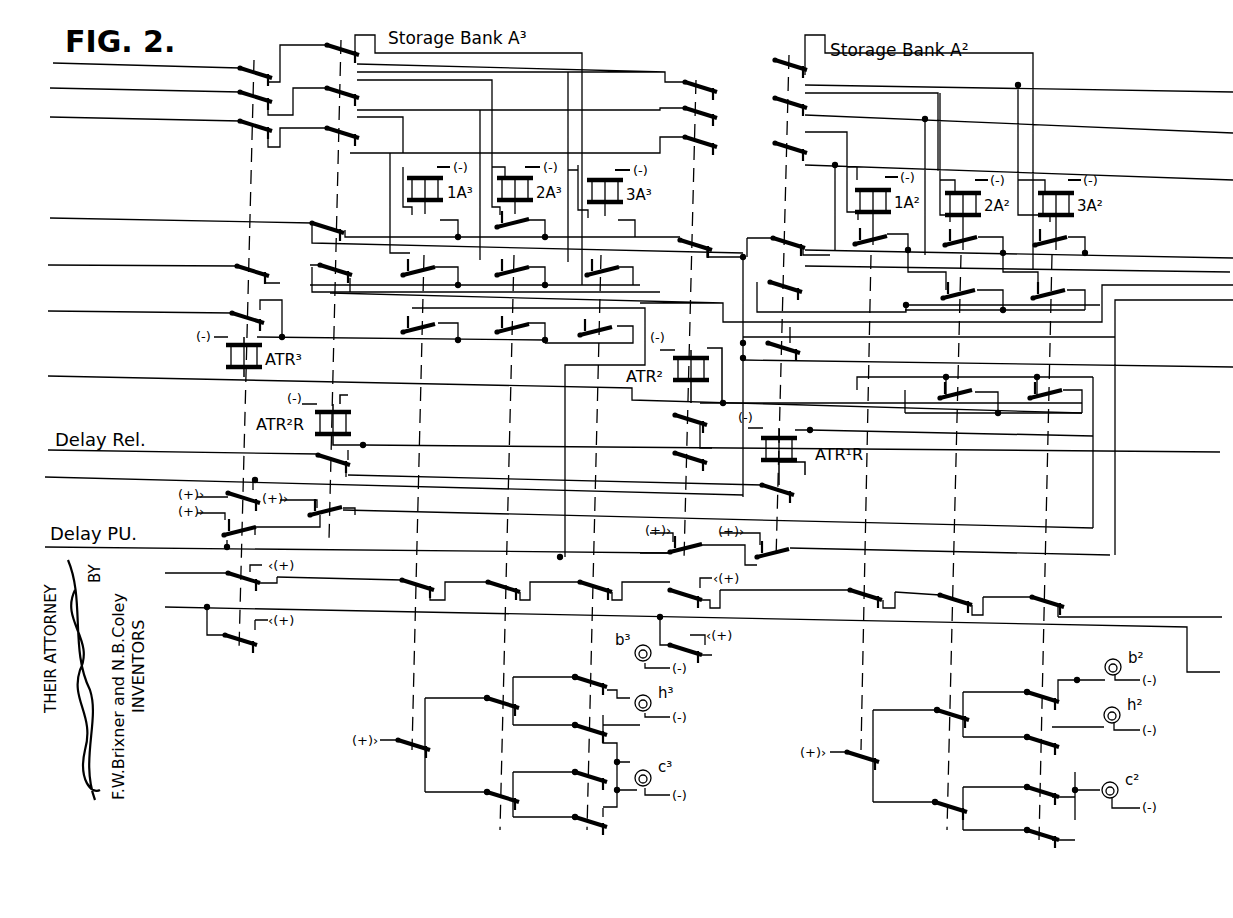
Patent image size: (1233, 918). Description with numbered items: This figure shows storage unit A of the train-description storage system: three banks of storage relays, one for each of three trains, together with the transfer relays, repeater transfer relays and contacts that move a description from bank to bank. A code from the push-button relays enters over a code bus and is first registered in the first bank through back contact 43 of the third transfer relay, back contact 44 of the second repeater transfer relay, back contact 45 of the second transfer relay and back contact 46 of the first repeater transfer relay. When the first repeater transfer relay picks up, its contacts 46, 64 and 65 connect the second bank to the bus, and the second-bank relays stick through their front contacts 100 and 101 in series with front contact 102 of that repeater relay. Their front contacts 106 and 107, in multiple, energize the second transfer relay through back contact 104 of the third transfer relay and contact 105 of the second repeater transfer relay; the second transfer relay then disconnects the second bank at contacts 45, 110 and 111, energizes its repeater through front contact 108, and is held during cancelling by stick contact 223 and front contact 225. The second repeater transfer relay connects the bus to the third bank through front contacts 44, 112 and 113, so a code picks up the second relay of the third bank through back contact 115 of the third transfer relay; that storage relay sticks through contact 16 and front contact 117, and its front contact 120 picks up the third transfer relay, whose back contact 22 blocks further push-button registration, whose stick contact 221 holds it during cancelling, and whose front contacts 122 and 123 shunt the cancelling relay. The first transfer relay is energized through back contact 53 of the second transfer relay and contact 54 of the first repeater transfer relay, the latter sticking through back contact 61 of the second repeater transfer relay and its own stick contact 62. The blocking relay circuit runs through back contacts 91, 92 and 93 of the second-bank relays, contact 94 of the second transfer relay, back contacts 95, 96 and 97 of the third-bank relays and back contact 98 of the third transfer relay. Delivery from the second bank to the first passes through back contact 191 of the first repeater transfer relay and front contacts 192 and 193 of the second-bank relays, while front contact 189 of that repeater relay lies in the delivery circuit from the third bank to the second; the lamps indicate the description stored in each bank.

The front contact of transfer repeater relay ATR²R 113 is at (331, 58).
The front contact of transfer repeater relay ATR²R 112 is at (331, 100).
The contact of repeater transfer relay ATR²R 44 is at (332, 140).
The back contact of transfer relay ATR³ 115 is at (243, 103).
The back contact of transfer relay ATR³ 43 is at (245, 132).
The front contact of repeater transfer relay ATR²R 117 is at (321, 222).
The back contact of transfer relay ATR³ 22 is at (253, 272).
The stick contact of transfer relay ATR³ 221 is at (240, 310).
The front contact of storage relay 2A³ 120 is at (506, 327).
The contact 16 is at (520, 226).
The front contact of repeater transfer relay ATR¹R 102 is at (788, 237).
The contact of transfer relay ATR² 111 is at (688, 93).
The contact of transfer relay ATR² 110 is at (687, 119).
The back contact of transfer relay ATR² 45 is at (690, 148).
The contact of repeater transfer relay ATR¹R 46 is at (778, 154).
The front contact of repeater transfer relay ATR¹R 65 is at (778, 70).
The front contact of repeater transfer relay ATR¹R 64 is at (778, 109).
The front contact of storage relay 2A² 100 is at (965, 242).
The front contact of storage relay 3A² 101 is at (1055, 242).
The back contact of repeater transfer relay ATR¹R 191 is at (792, 283).
The front contact of storage relay 2A² 192 is at (970, 285).
The front contact of storage relay 3A² 193 is at (1060, 285).
The front contact of repeater transfer relay ATR¹R 189 is at (796, 344).
The front contact of storage relay 2A² 106 is at (937, 394).
The front contact of relay 3A³ 107 is at (1032, 394).
The stick contact of transfer relay ATR² 223 is at (694, 430).
The front contact of transfer relay ATR² 108 is at (677, 463).
The back contact of repeater transfer relay ATR²R 61 is at (325, 465).
The stick contact of repeater transfer relay ATR¹R 62 is at (794, 495).
The front contact of transfer relay ATR³ 122 is at (250, 506).
The back contact of transfer relay ATR³ 104 is at (249, 534).
The contact of repeater transfer relay ATR²R 105 is at (338, 514).
The back contact of transfer relay ATR² 53 is at (689, 551).
The contact of repeater transfer relay ATR¹R 54 is at (779, 556).
The back contact of transfer relay ATR³ 98 is at (231, 583).
The back contact of storage relay 1A³ 97 is at (408, 591).
The back contact of storage relay 2A³ 96 is at (494, 593).
The back contact of storage relay 3A³ 95 is at (586, 593).
The contact of transfer relay ATR² 94 is at (676, 601).
The back contact of storage relay 1A² 93 is at (855, 602).
The back contact of storage relay 2A² 92 is at (946, 607).
The back contact of storage relay 3A² 91 is at (1038, 609).
The front contact of transfer relay ATR² 225 is at (700, 656).
The front contact of transfer relay ATR³ 123 is at (230, 648).